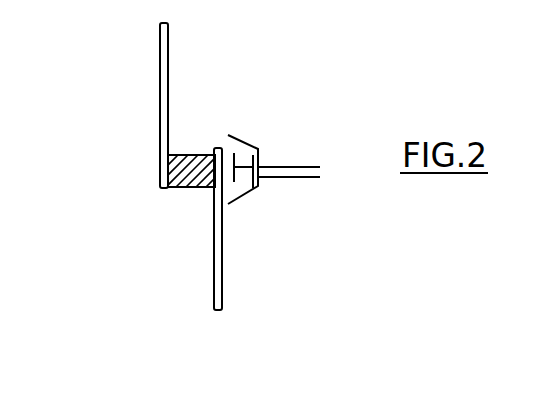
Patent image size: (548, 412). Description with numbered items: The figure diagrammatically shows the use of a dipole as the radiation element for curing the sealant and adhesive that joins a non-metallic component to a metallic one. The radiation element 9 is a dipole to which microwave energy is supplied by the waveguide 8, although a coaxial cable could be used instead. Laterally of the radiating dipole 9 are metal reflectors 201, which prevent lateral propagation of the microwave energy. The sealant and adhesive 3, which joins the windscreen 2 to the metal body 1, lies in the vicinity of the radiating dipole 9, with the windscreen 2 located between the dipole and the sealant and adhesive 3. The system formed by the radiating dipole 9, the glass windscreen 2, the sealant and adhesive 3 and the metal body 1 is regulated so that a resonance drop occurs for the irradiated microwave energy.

The metal body 1 is at (162, 89).
The windscreen 2 is at (213, 277).
The sealant and adhesive 3 is at (180, 187).
The waveguide 8 is at (310, 167).
The radiation element 9 is at (245, 192).
The metal reflectors 201 is at (243, 142).